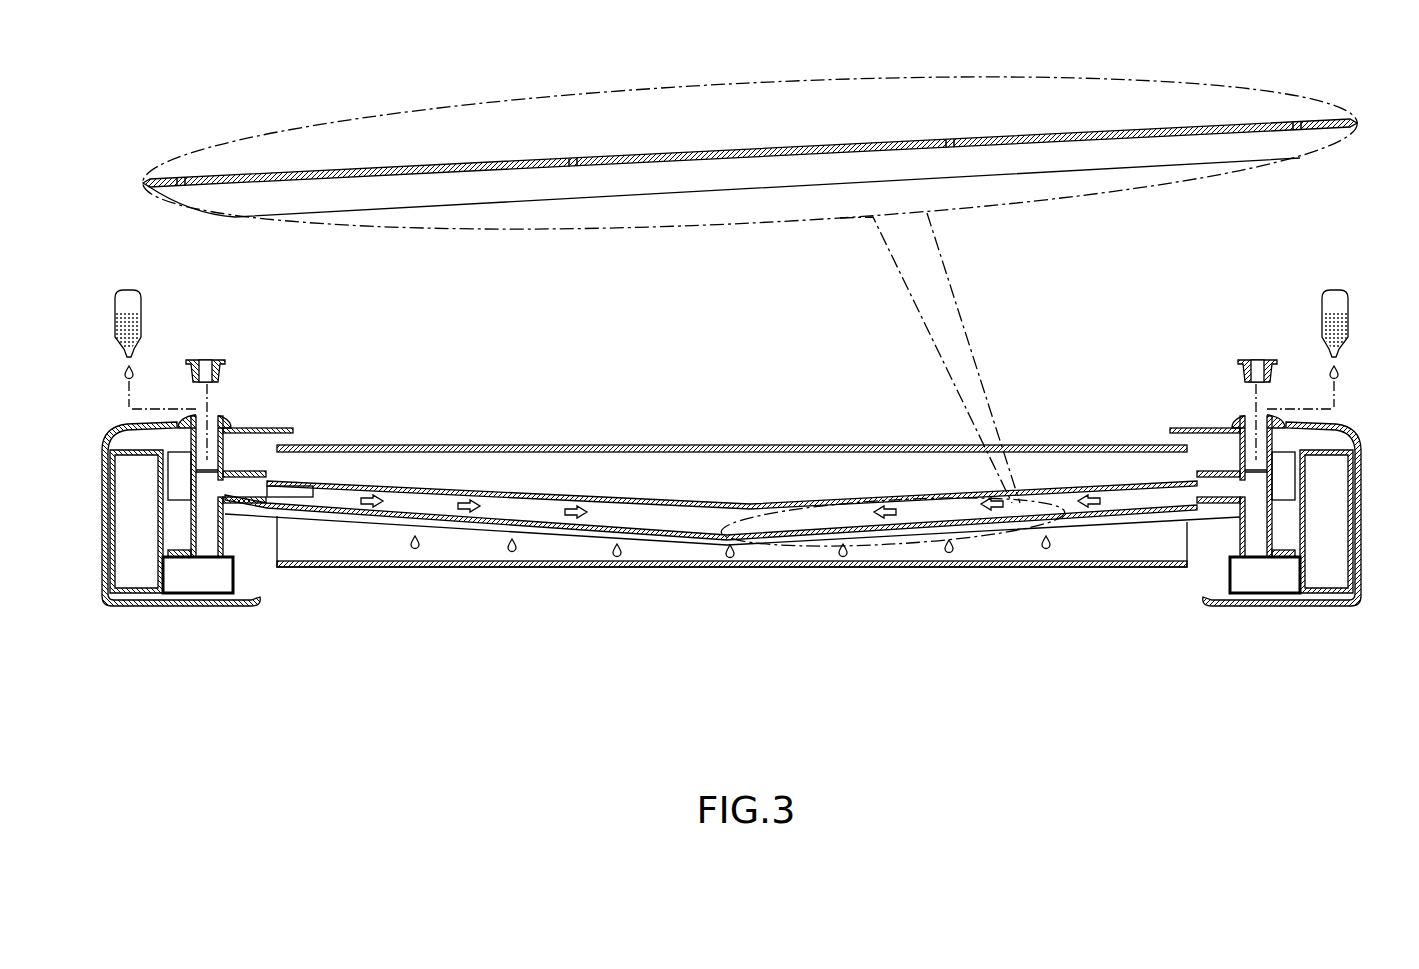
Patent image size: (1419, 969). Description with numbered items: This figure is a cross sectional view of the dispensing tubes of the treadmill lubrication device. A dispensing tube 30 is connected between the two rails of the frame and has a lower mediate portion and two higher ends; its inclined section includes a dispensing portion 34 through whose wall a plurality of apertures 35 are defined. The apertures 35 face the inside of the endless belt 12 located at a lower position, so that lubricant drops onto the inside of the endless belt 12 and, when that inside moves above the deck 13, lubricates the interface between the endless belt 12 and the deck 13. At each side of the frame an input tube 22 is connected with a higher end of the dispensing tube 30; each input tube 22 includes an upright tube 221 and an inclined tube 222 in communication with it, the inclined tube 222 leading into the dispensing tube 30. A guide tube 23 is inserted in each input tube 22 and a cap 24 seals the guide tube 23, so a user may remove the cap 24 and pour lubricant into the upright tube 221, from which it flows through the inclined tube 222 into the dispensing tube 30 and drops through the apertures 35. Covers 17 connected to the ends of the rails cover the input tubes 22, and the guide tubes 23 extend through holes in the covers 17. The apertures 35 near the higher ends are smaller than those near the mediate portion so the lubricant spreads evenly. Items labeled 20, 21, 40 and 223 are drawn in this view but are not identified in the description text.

The endless belt 12 is at (373, 567).
The deck 13 is at (355, 473).
The covers 17 is at (1330, 427).
The connector assembly 20 is at (1262, 459).
The housing 21 is at (1273, 522).
The input tubes 22 is at (1262, 484).
The guide tube 23 is at (1237, 420).
The cap 24 is at (1243, 360).
The dispensing tubes 30 is at (477, 145).
The dispensing portion 34 is at (763, 153).
The apertures 35 is at (180, 182).
The dispensing bottle 40 is at (1322, 322).
The upright tube 221 is at (1260, 477).
The inclined tube 222 is at (1233, 503).
The outlet opening 223 is at (1200, 500).